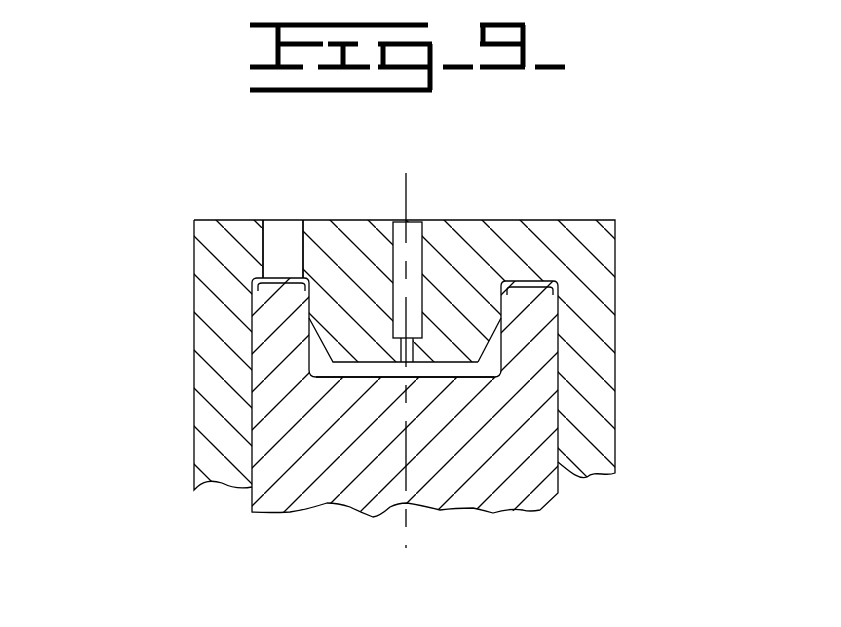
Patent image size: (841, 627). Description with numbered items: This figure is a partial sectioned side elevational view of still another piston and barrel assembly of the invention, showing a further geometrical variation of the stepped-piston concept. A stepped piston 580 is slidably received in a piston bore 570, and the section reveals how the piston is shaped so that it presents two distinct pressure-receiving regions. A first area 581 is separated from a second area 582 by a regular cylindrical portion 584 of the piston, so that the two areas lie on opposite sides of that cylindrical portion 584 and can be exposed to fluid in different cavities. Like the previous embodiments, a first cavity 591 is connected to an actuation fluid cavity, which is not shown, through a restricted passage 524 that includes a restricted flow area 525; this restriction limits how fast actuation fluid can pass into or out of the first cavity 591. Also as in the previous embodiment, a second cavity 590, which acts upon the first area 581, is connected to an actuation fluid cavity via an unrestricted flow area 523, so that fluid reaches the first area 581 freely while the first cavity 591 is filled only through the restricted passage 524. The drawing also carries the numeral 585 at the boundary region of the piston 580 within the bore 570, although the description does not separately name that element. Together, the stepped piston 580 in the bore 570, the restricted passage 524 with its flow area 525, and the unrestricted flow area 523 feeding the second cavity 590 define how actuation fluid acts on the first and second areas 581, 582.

The piston bore 570 is at (560, 404).
The stepped piston 580 is at (250, 502).
The unrestricted flow area 523 is at (262, 270).
The second cavity 590 is at (316, 292).
The first area 581 is at (526, 285).
The restricted passage 524 is at (415, 240).
The restricted flow area 525 is at (406, 378).
The seal lip 585 is at (325, 343).
The regular cylindrical portion 584 is at (494, 341).
The second area 582 is at (478, 365).
The first cavity 591 is at (457, 369).